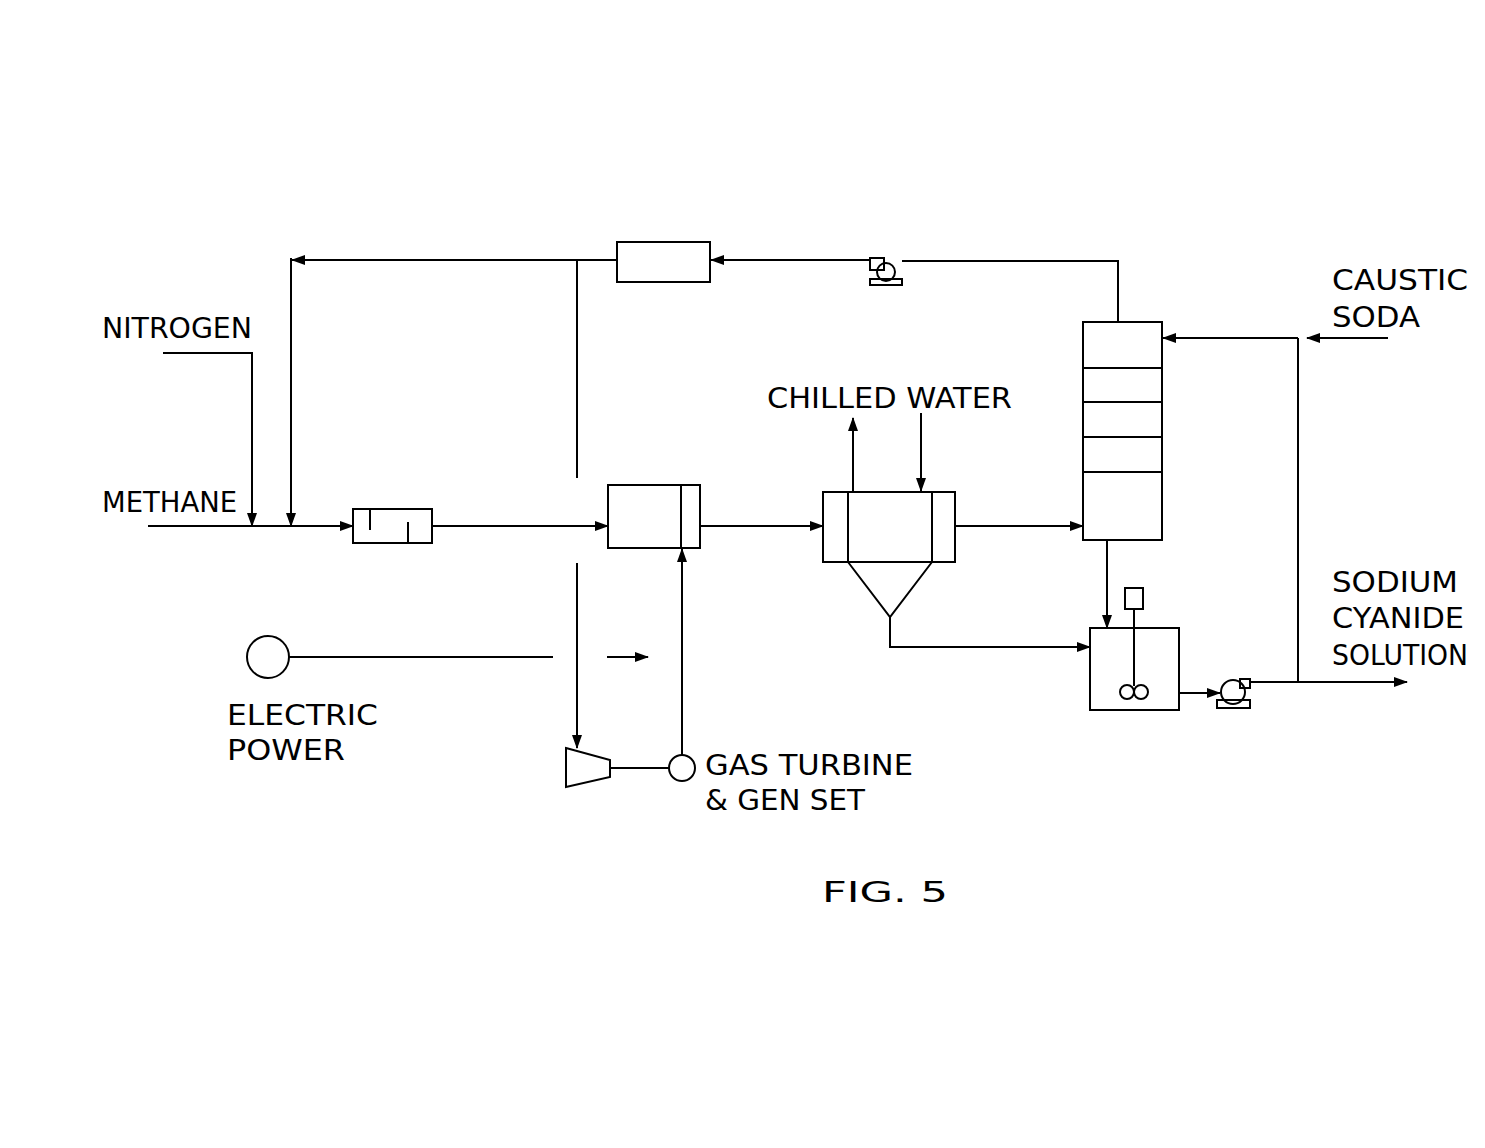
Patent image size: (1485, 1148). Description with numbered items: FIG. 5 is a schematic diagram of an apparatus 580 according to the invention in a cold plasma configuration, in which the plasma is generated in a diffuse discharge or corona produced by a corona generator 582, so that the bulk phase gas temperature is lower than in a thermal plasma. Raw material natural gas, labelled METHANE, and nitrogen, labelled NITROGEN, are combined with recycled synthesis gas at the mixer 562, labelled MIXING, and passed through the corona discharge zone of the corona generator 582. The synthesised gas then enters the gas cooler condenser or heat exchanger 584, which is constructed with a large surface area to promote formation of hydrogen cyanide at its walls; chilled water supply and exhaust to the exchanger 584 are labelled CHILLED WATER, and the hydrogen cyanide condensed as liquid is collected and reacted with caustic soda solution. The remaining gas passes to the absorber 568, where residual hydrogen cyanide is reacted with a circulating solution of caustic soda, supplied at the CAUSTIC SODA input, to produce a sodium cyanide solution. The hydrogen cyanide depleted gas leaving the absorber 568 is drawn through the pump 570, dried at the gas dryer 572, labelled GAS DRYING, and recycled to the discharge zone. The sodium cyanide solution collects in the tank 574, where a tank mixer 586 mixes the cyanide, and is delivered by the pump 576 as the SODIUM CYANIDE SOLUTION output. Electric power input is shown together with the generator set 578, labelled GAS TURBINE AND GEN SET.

The mixer 562 is at (410, 554).
The absorber 568 is at (1168, 442).
The pump 570 is at (898, 247).
The gas dryer 572 is at (661, 192).
The tank 574 is at (1116, 719).
The pump 576 is at (1257, 719).
The generator set 578 is at (551, 781).
The apparatus 580 is at (1241, 229).
The corona generator 582 is at (680, 482).
The gas cooler condenser or heat exchanger 584 is at (831, 579).
The tank mixer 586 is at (1151, 612).